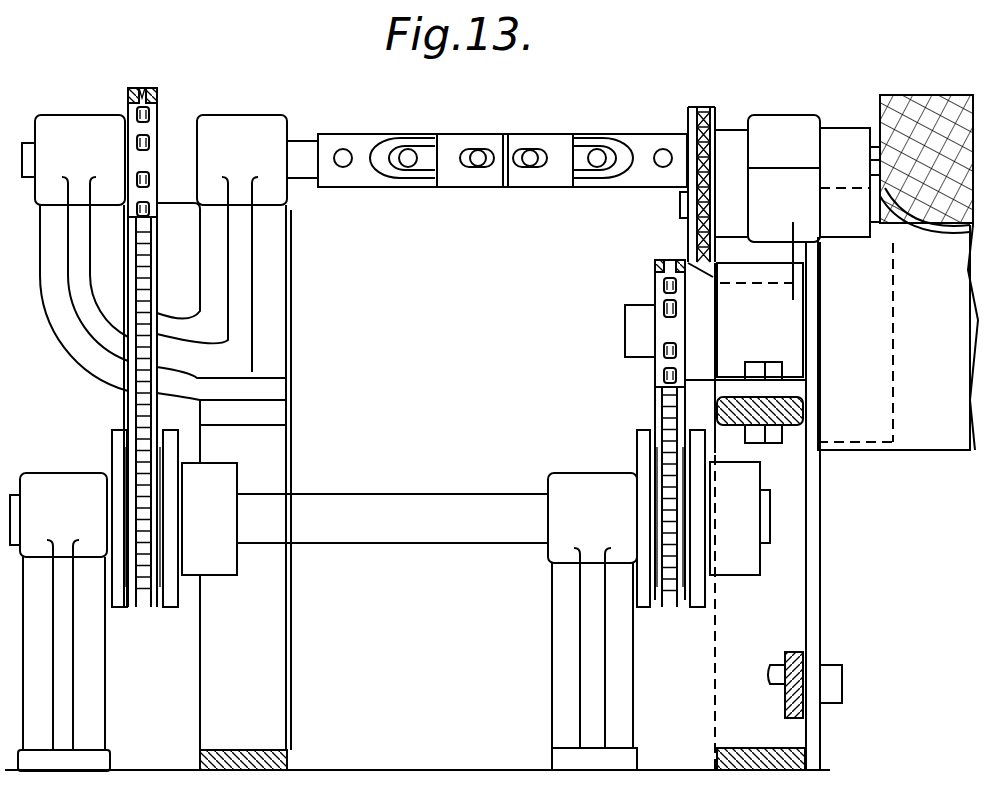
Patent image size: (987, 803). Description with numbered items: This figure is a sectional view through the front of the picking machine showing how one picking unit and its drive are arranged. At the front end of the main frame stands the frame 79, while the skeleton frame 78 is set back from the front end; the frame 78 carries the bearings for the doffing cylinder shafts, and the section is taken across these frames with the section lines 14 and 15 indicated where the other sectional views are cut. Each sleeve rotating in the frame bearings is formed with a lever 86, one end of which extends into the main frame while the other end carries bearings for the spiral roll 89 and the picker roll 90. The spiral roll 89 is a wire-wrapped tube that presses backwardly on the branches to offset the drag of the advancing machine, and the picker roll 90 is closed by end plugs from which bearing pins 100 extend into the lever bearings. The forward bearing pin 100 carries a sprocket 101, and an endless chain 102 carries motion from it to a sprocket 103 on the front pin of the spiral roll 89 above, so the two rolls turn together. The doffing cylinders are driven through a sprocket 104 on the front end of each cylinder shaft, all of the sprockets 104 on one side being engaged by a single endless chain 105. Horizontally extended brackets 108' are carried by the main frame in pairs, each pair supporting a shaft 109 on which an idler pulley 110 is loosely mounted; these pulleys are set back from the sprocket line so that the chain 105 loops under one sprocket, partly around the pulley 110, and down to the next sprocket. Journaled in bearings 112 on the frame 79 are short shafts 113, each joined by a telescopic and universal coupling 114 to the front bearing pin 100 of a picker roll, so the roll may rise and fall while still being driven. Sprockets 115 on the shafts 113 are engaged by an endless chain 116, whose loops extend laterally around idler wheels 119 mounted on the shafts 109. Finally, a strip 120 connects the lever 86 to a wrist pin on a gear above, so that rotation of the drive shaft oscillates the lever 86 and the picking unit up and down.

The skeleton frame 78 is at (807, 750).
The frame 79 is at (290, 748).
The lever 86 is at (820, 340).
The spiral roll 89 is at (896, 222).
The picker roll 90 is at (883, 100).
The bearing pin 100 is at (872, 163).
The sprocket 101 is at (712, 118).
The endless chain 102 is at (714, 168).
The sprocket 103 is at (688, 205).
The sprocket 104 is at (663, 330).
The endless chain 105 is at (660, 407).
The horizontally extended bracket 108' is at (323, 622).
The shaft 109 is at (397, 538).
The idler pulley 110 is at (640, 443).
The bearing 112 is at (267, 275).
The short shaft 113 is at (303, 178).
The telescopic and universal coupling 114 is at (458, 177).
The sprocket 115 is at (147, 112).
The endless chain 116 is at (133, 285).
The idler wheel 119 is at (178, 602).
The strip 120 is at (803, 662).
The section line 14 is at (685, 108).
The section line 15 is at (940, 78).